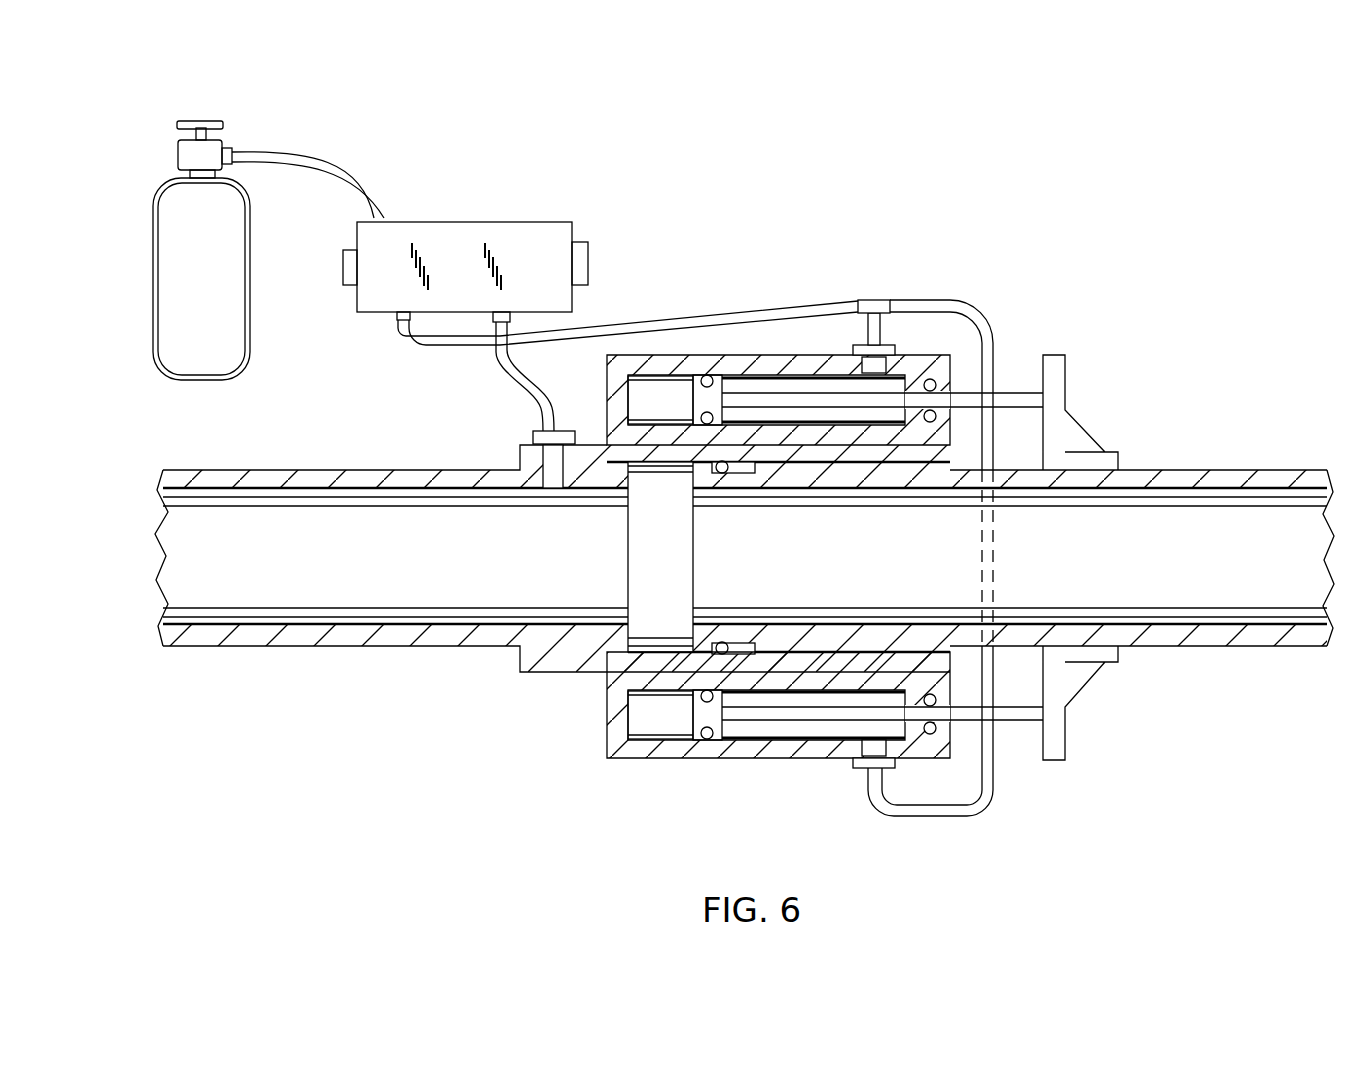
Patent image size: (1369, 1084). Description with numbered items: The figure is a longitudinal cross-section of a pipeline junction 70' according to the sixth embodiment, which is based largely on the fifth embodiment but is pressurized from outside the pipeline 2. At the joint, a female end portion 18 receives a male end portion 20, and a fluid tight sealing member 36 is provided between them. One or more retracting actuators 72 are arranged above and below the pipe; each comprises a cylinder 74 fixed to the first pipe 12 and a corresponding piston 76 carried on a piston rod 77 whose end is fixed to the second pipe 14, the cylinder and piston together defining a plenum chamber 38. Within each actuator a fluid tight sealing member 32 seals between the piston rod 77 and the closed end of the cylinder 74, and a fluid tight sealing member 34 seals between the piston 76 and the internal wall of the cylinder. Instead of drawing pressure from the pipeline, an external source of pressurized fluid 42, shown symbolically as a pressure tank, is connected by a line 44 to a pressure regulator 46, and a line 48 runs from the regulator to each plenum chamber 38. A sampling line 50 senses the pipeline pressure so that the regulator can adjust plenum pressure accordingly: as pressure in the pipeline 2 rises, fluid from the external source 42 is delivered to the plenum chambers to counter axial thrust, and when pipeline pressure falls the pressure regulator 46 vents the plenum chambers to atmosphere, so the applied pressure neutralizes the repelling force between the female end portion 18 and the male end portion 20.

The pipeline 2 is at (744, 560).
The first pipe 12 is at (355, 465).
The second pipe 14 is at (1228, 468).
The female end portion 18 is at (787, 662).
The male end portion 20 is at (817, 477).
The fluid tight sealing member 32 is at (929, 379).
The fluid tight sealing member 34 is at (705, 374).
The fluid tight sealing member 36 is at (720, 643).
The plenum chamber 38 is at (830, 382).
The external source of pressurized fluid 42 is at (126, 302).
The line 44 is at (308, 157).
The pressure regulator 46 is at (468, 221).
The line 48 is at (822, 302).
The sampling line 50 is at (528, 396).
The junction 70' is at (902, 518).
The retracting actuator 72 is at (836, 557).
The cylinder 74 is at (945, 309).
The piston 76 is at (688, 402).
The piston rod 77 is at (1014, 392).